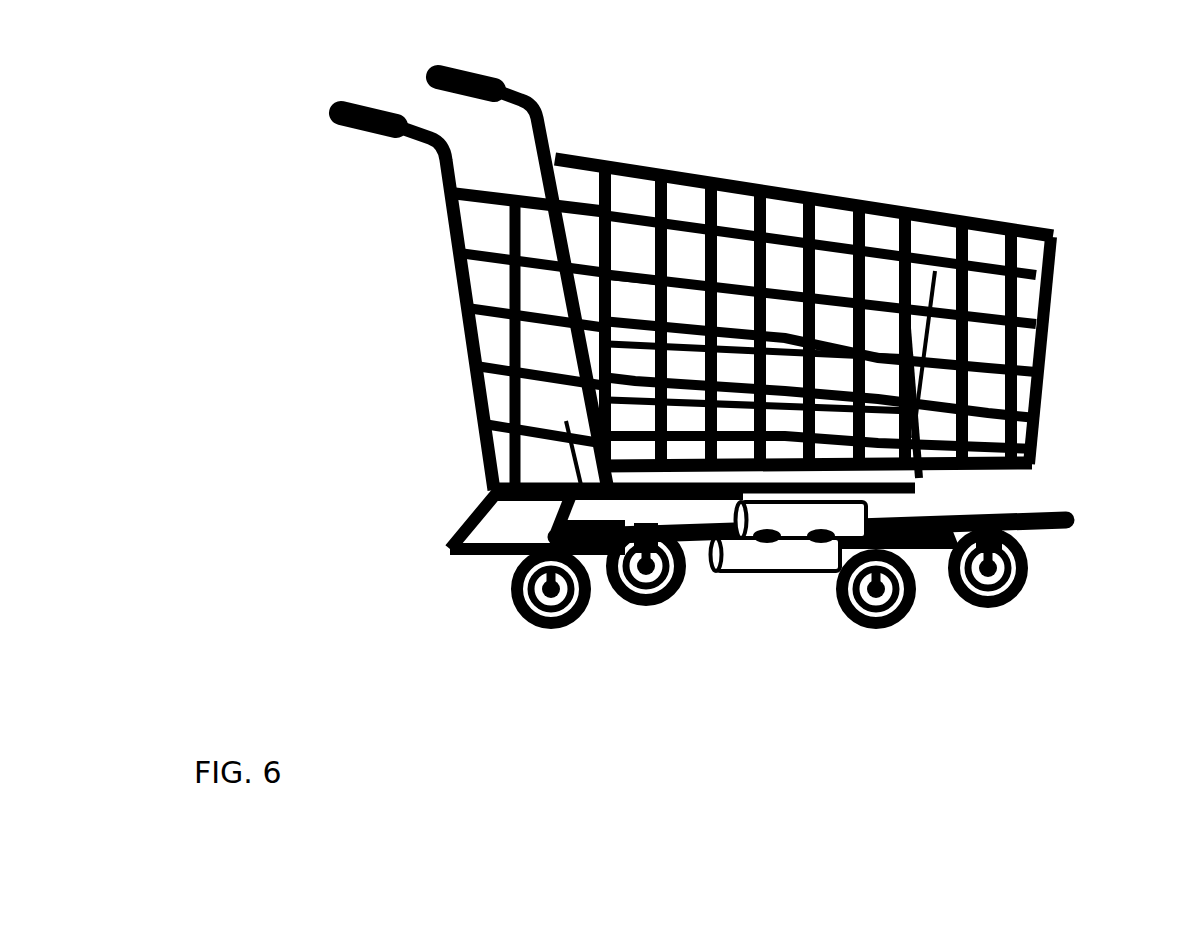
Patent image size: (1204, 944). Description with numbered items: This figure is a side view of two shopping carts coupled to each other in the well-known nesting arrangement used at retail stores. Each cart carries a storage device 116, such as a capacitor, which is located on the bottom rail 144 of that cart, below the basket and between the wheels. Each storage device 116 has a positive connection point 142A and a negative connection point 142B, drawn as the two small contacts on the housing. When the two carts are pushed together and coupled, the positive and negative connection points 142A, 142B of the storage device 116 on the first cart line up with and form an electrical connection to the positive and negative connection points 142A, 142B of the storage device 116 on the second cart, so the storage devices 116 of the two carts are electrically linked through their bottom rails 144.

The storage device 116 is at (855, 512).
The positive connection point 142A is at (760, 535).
The negative connection point 142B is at (817, 535).
The bottom rail 144 is at (1055, 518).